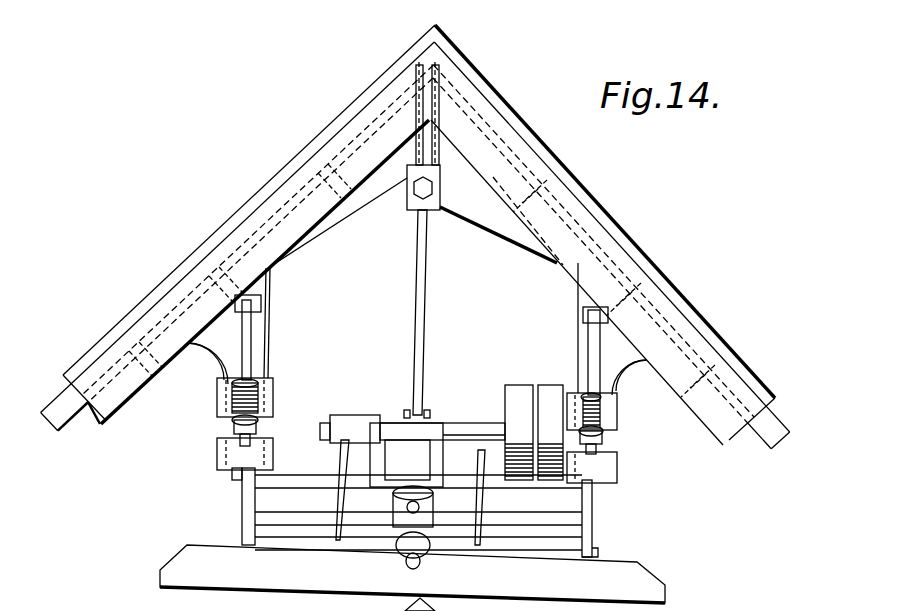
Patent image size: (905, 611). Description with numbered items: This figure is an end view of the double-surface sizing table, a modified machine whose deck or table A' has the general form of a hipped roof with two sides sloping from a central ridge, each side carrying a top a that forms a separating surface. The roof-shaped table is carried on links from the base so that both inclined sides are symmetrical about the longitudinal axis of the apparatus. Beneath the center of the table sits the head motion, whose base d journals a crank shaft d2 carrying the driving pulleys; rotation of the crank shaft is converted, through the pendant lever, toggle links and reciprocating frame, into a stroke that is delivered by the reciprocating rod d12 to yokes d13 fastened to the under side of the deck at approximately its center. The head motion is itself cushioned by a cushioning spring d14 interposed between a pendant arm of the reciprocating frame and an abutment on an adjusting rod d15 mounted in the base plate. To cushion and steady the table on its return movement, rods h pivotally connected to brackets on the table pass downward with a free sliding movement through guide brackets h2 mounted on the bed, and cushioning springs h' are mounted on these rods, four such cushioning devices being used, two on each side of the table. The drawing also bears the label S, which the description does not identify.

The top a is at (422, 229).
The deck or table A' is at (419, 235).
The strips S is at (60, 403).
The cushioning spring d14 is at (366, 207).
The yokes d13 is at (419, 196).
The reciprocating rod d12 is at (423, 314).
The rods h is at (417, 345).
The guide brackets h2 is at (225, 450).
The cushioning springs h' is at (416, 416).
The crank shaft d2 is at (328, 425).
The base d is at (515, 385).
The adjusting rod d15 is at (422, 562).